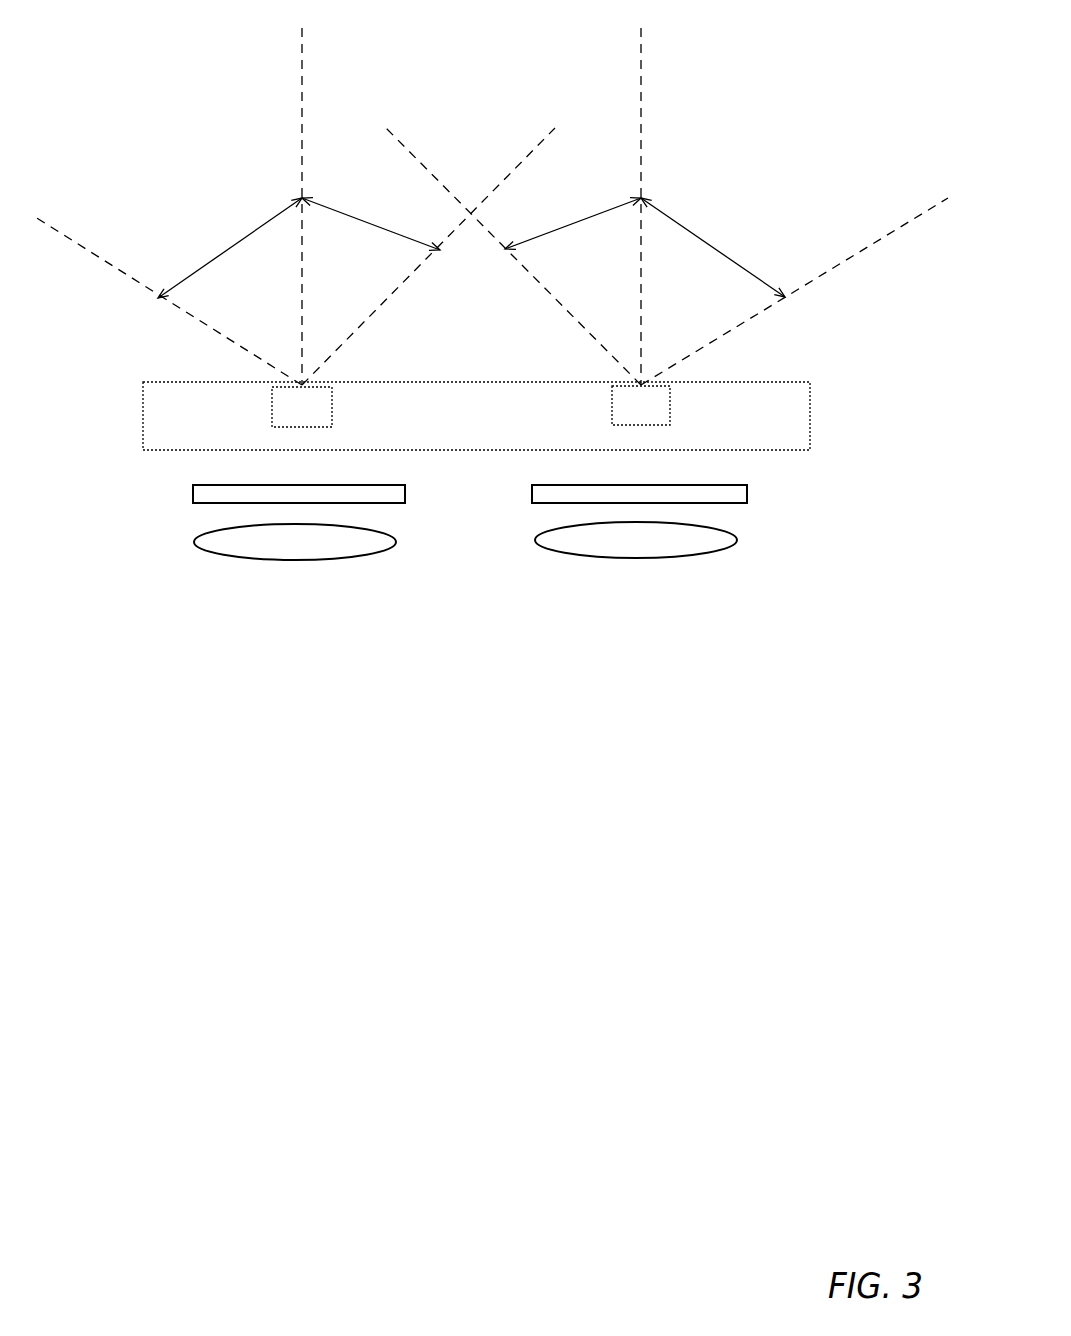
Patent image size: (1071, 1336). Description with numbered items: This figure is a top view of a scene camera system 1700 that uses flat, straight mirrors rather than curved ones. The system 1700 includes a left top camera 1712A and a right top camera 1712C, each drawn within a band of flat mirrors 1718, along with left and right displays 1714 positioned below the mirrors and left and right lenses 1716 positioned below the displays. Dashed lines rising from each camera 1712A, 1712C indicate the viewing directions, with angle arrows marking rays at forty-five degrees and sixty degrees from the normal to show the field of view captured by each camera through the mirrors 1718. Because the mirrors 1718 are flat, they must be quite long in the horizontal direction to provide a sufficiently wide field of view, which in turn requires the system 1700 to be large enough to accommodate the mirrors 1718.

The scene camera system 1700 is at (217, 87).
The left top camera 1712A is at (280, 414).
The right top camera 1712C is at (619, 412).
The flat mirrors 1718 is at (452, 436).
The left and right displays 1714 is at (470, 484).
The left and right lenses 1716 is at (465, 541).